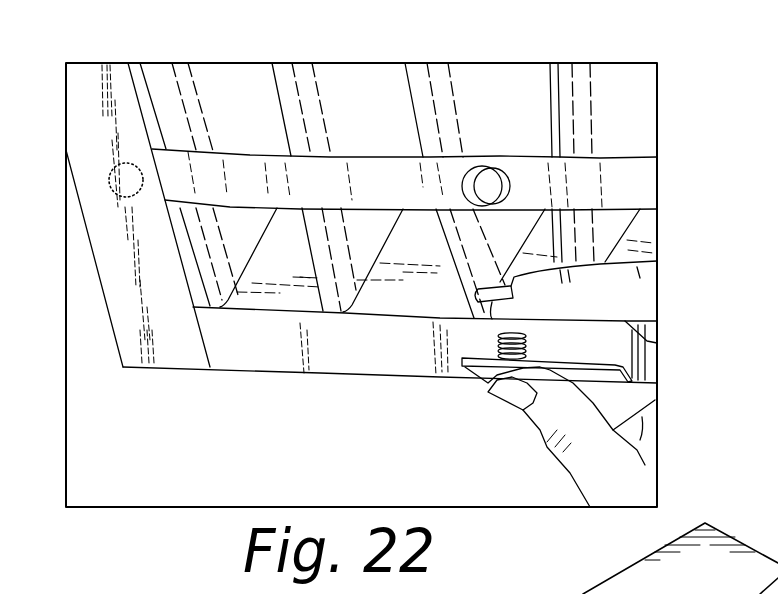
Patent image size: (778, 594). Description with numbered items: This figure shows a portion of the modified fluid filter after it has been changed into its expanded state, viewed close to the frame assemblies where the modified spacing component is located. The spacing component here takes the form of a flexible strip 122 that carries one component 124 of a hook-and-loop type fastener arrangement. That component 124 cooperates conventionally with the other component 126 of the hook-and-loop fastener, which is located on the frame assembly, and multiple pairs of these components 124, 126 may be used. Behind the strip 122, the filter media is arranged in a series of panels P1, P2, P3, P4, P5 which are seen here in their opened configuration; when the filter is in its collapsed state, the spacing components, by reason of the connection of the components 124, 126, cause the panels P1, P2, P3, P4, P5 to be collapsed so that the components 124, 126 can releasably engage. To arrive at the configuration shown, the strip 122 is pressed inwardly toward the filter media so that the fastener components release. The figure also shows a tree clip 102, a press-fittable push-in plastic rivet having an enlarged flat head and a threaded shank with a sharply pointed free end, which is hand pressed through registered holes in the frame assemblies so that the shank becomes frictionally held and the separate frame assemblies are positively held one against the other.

The panel P1 is at (407, 67).
The panel P2 is at (358, 93).
The panel P3 is at (283, 80).
The panel P4 is at (238, 97).
The panel P5 is at (158, 78).
The hook-and-loop fastener component 124 is at (484, 187).
The flexible strip 122 is at (633, 188).
The hook-and-loop fastener component 126 is at (107, 181).
The tree clip 102 is at (497, 337).